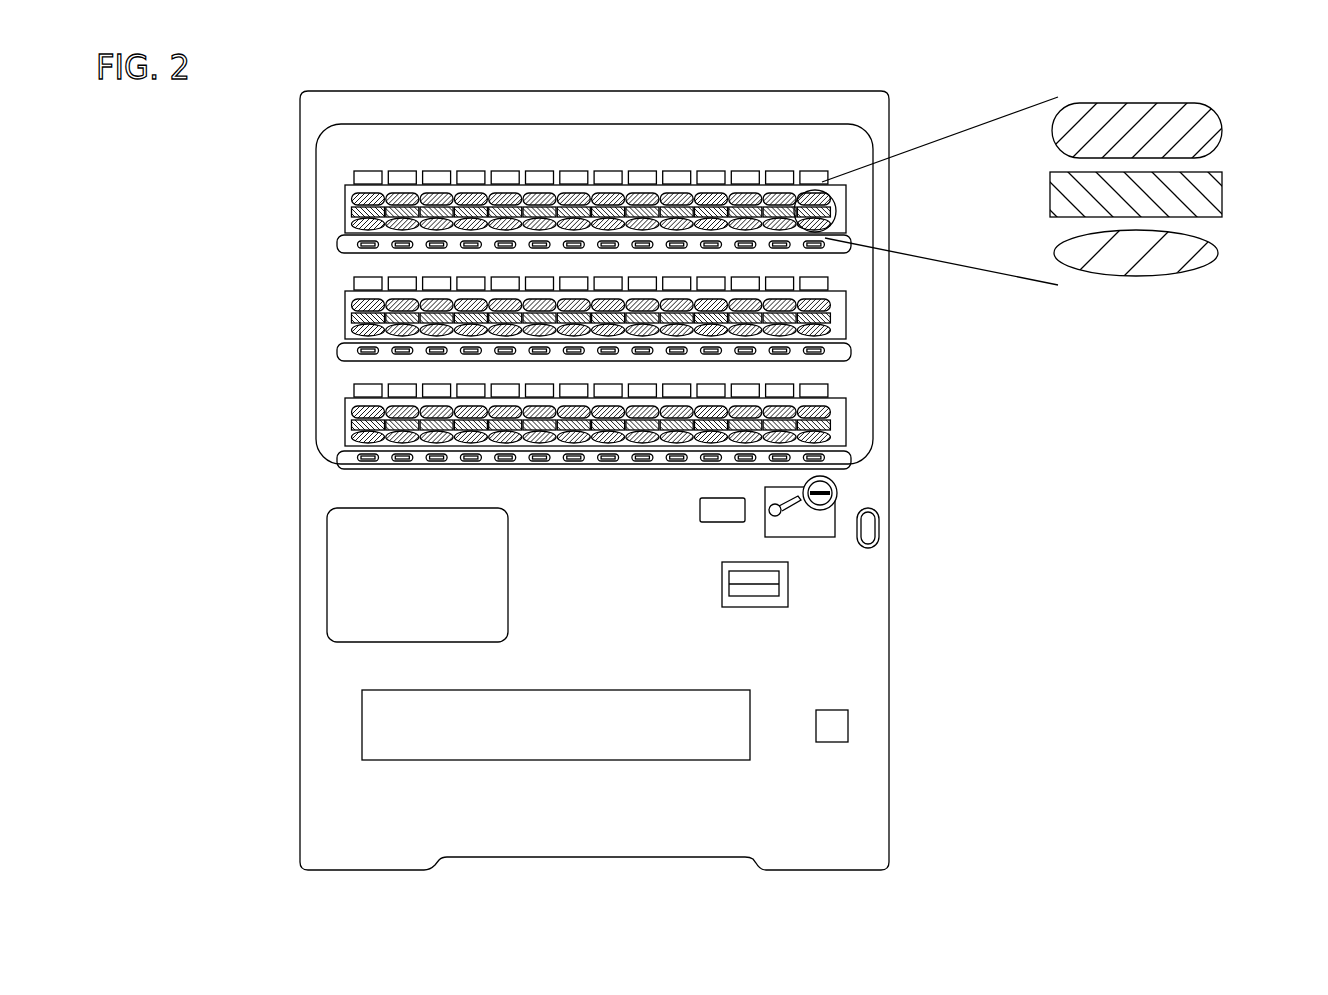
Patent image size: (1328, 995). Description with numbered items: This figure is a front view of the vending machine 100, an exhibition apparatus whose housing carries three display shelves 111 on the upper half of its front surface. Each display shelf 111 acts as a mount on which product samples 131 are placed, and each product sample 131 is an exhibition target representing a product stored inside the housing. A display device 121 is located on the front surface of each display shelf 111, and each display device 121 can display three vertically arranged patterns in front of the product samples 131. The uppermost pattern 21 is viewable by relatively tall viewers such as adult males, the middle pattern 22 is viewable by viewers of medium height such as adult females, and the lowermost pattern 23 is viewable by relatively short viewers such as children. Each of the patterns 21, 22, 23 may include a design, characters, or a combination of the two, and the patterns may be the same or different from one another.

The vending machine 100 is at (957, 805).
The display shelf 111 is at (851, 252).
The display device 121 is at (345, 190).
The product sample 131 is at (810, 171).
The uppermost pattern 21 is at (1208, 118).
The middle pattern 22 is at (1214, 195).
The lowermost pattern 23 is at (1210, 255).